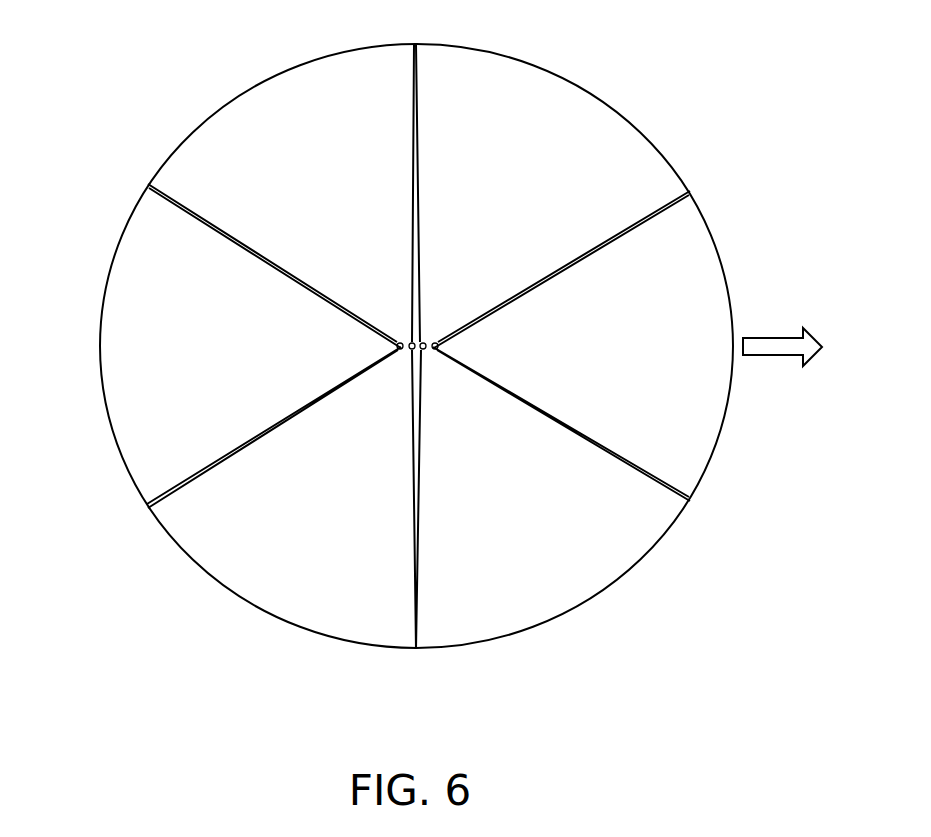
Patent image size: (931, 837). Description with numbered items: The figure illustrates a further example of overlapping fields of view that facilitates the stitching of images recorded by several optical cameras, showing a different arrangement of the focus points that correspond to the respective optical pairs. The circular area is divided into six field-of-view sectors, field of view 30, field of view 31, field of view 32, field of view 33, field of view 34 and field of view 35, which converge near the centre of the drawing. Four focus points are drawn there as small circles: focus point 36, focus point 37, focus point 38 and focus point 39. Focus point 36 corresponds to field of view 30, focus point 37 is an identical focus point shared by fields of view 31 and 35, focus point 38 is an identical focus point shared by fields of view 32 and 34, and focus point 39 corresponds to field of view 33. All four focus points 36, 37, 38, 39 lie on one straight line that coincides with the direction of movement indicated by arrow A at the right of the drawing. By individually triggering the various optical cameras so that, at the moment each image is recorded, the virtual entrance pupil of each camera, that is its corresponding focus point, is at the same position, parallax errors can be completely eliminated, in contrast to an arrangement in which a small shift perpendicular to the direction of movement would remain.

The field of view 30 is at (705, 300).
The field of view 31 is at (572, 574).
The field of view 32 is at (265, 573).
The field of view 33 is at (130, 338).
The field of view 34 is at (315, 80).
The field of view 35 is at (528, 97).
The focus point 36 is at (438, 346).
The focus point 37 is at (425, 337).
The focus point 38 is at (410, 337).
The focus point 39 is at (397, 346).
The arrow indicating direction of movement A is at (780, 342).